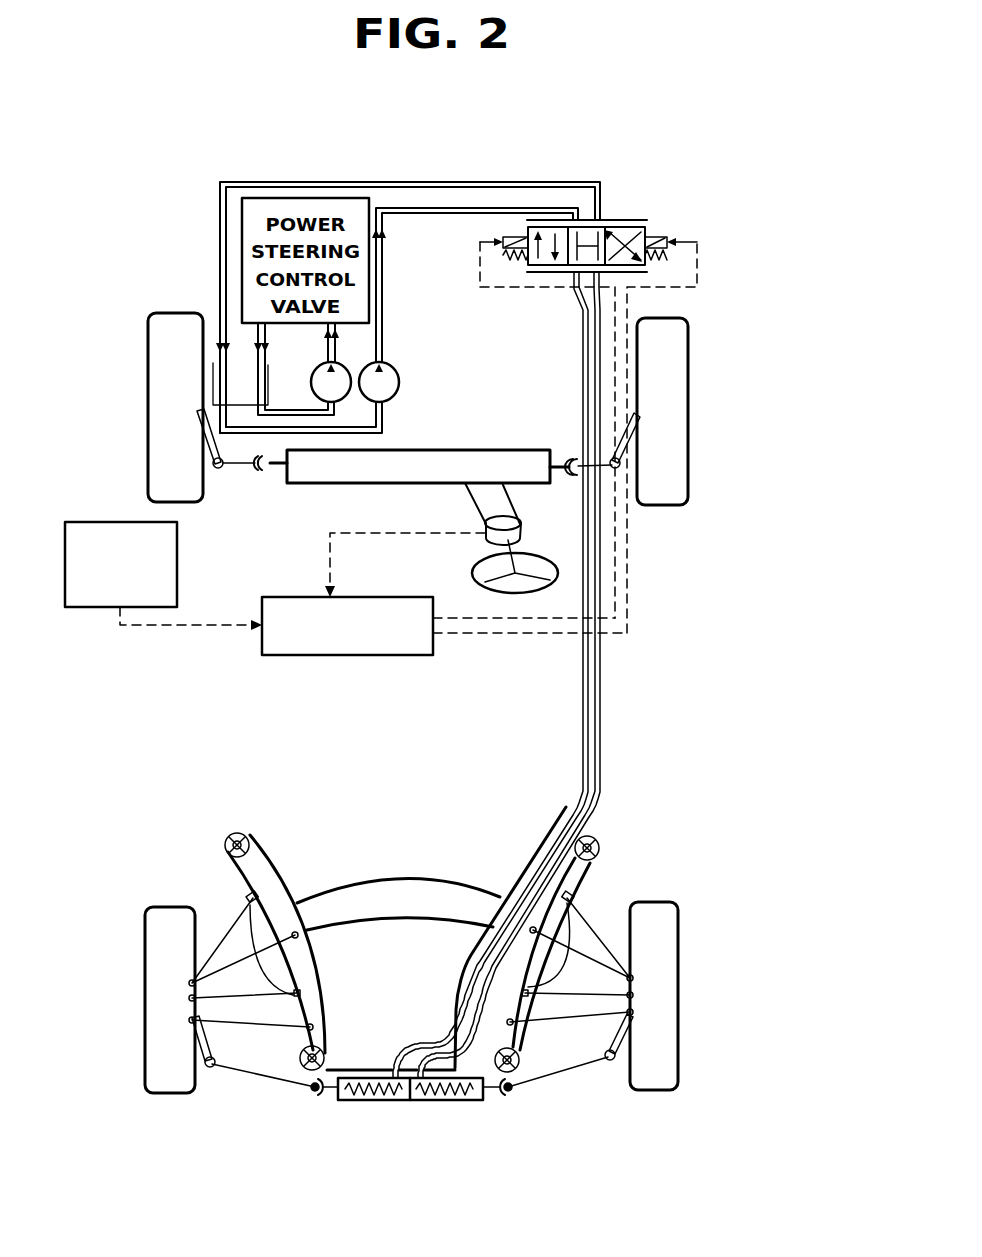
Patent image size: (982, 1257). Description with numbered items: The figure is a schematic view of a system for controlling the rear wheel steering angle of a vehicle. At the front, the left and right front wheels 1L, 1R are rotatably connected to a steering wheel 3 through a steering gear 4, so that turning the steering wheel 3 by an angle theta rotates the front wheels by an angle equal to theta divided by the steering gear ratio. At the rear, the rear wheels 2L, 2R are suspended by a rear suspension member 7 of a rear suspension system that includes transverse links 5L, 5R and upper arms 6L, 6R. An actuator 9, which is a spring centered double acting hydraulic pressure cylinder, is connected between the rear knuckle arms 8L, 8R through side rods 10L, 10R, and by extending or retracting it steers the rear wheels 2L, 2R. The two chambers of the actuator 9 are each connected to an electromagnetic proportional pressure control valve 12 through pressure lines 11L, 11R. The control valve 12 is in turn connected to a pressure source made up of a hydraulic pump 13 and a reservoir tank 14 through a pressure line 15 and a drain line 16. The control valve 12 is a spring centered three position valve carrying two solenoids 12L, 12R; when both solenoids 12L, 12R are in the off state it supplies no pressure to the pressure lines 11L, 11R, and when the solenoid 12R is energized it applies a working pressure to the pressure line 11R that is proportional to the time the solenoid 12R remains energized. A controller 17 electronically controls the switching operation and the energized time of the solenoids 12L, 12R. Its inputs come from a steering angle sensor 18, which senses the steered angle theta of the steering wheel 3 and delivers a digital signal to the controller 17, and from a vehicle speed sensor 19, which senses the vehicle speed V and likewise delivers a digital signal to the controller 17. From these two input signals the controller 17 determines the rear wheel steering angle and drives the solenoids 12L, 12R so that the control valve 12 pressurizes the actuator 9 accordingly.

The left front wheel 1L is at (148, 322).
The right front wheel 1R is at (688, 342).
The left rear wheel 2L is at (145, 1063).
The right rear wheel 2R is at (678, 1077).
The steering wheel 3 is at (473, 568).
The steering gear 4 is at (443, 448).
The left transverse link 5L is at (237, 938).
The right transverse link 5R is at (585, 935).
The left upper arm 6L is at (292, 1020).
The right upper arm 6R is at (583, 1017).
The rear suspension member 7 is at (416, 884).
The left rear knuckle arm 8L is at (214, 1043).
The right rear knuckle arm 8R is at (608, 1040).
The actuator 9 is at (417, 1102).
The left side rod 10L is at (273, 1083).
The right side rod 10R is at (570, 1073).
The left pressure line 11L is at (583, 720).
The right pressure line 11R is at (602, 728).
The electromagnetic proportional pressure control valve 12 is at (624, 213).
The left solenoid 12L is at (508, 229).
The right solenoid 12R is at (657, 237).
The hydraulic pump 13 is at (392, 368).
The reservoir tank 14 is at (271, 388).
The pressure line 15 is at (418, 214).
The drain line 16 is at (421, 182).
The controller 17 is at (370, 655).
The steering angle sensor 18 is at (521, 524).
The vehicle speed sensor 19 is at (177, 543).